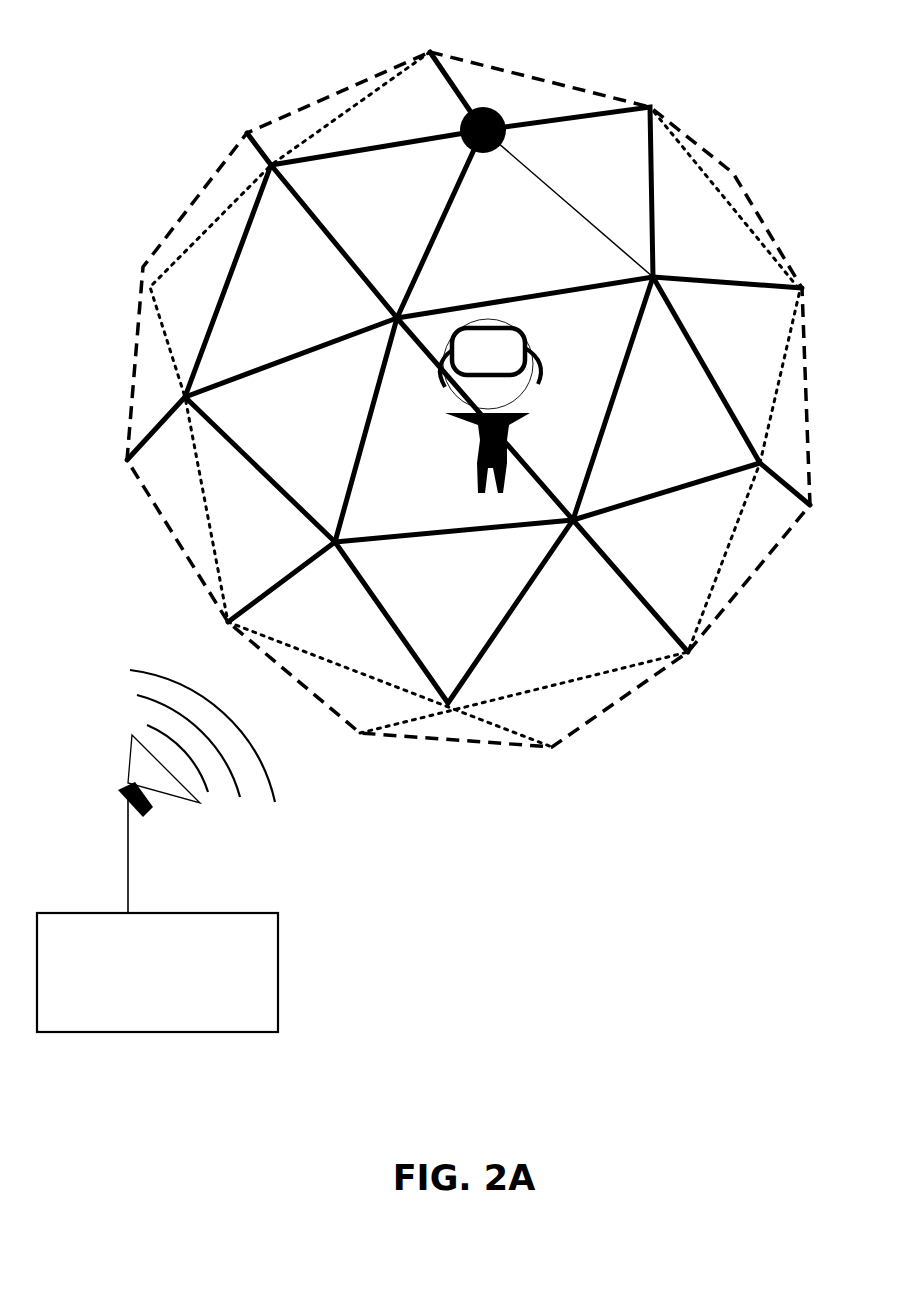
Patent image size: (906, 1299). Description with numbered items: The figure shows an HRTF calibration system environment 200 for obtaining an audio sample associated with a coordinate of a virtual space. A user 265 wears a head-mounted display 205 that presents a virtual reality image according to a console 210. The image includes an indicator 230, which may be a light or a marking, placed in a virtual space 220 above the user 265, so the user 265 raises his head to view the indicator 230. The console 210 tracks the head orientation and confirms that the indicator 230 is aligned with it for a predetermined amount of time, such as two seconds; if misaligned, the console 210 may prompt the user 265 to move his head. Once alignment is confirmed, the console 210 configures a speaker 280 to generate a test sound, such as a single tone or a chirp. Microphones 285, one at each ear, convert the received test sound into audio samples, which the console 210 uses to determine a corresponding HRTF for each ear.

The HRTF calibration system environment 200 is at (66, 35).
The virtual space 220 is at (303, 108).
The indicator 230 is at (473, 107).
The head-mounted display 205 is at (490, 325).
The microphones 285 is at (447, 385).
The user 265 is at (475, 463).
The speaker 280 is at (170, 791).
The console 210 is at (178, 1014).